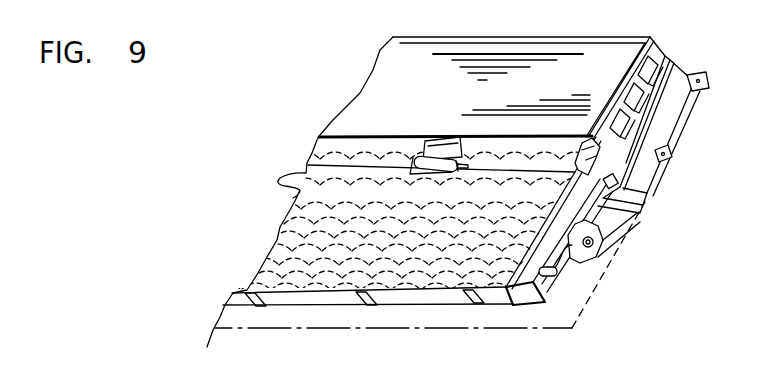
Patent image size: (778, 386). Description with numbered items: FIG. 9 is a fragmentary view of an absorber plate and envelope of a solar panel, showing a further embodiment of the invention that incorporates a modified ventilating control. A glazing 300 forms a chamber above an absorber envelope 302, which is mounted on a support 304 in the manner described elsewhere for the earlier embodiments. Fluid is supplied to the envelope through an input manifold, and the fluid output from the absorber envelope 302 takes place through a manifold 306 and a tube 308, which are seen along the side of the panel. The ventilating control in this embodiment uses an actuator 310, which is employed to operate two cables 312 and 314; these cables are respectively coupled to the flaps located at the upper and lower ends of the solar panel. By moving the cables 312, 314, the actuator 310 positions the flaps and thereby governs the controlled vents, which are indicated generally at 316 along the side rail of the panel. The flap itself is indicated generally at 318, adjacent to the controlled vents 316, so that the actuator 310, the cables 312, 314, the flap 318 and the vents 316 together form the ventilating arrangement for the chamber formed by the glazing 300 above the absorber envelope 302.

The glazing 300 is at (405, 136).
The absorber envelope 302 is at (338, 282).
The support 304 is at (415, 301).
The manifold 306 is at (524, 286).
The tube 308 is at (572, 266).
The actuator 310 is at (440, 167).
The cable 312 is at (517, 173).
The cable 314 is at (373, 164).
The controlled vents 316 is at (637, 108).
The flap 318 is at (590, 163).